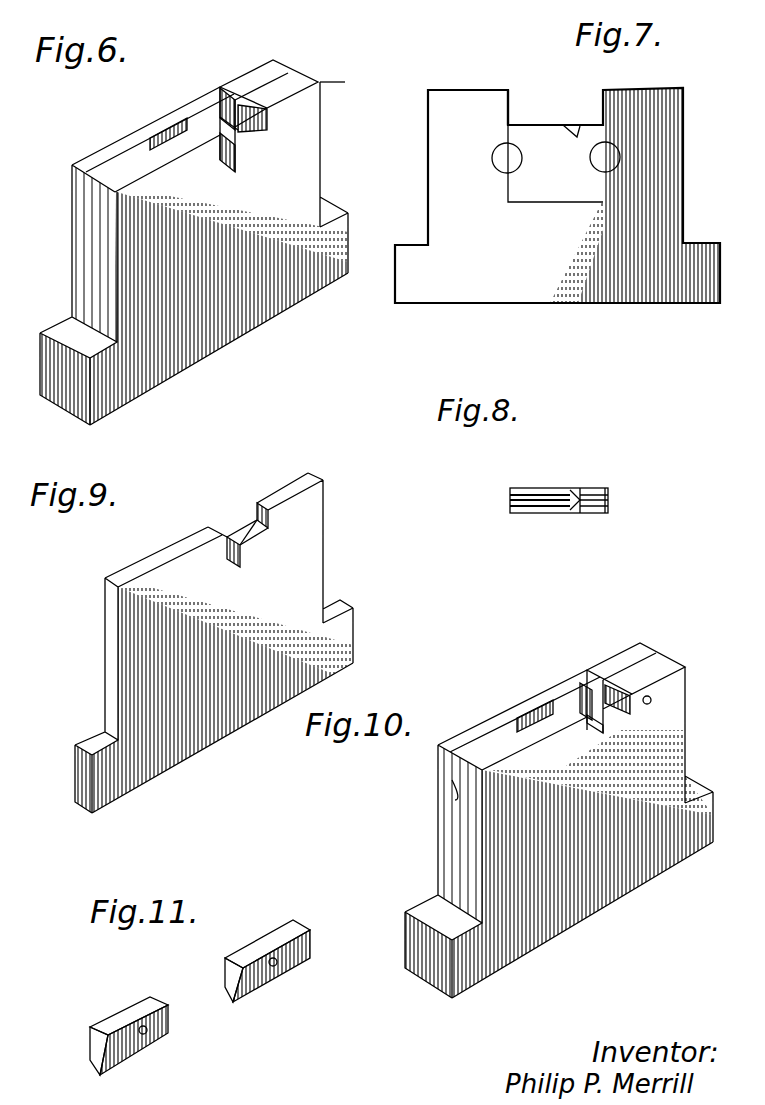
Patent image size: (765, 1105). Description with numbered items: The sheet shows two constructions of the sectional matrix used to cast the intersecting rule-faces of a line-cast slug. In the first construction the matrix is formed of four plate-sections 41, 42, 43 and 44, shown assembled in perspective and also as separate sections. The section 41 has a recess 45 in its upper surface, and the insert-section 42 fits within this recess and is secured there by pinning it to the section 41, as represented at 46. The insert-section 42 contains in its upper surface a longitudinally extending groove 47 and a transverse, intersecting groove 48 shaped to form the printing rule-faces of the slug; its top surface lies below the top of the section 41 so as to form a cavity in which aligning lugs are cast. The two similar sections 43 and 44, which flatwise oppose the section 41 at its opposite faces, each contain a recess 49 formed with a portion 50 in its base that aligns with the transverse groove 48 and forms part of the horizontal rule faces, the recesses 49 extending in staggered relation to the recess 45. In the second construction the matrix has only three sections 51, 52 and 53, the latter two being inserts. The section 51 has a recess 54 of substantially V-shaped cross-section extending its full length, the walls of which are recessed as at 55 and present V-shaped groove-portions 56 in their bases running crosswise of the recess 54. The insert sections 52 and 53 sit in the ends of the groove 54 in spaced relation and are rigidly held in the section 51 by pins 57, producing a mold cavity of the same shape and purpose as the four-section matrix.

In FIG. 6, the plate-section 41 is at (287, 76).
In FIG. 7, the plate-section 41 is at (672, 223).
In FIG. 6, the insert-section 42 is at (155, 138).
In FIG. 7, the insert-section 42 is at (583, 190).
In FIG. 8, the insert-section 42 is at (535, 488).
In FIG. 6, the plate-section 43 is at (347, 84).
In FIG. 6, the plate-section 44 is at (273, 66).
In FIG. 9, the plate-section 44 is at (223, 643).
In FIG. 7, the recess 45 is at (510, 108).
In FIG. 7, the pinning 46 is at (500, 152).
In FIG. 8, the longitudinally extending groove 47 is at (550, 507).
In FIG. 7, the transverse groove 48 is at (577, 138).
In FIG. 8, the transverse groove 48 is at (578, 489).
In FIG. 6, the recess 49 is at (233, 140).
In FIG. 9, the recess 49 is at (247, 532).
In FIG. 6, the portion 50 is at (238, 163).
In FIG. 9, the portion 50 is at (242, 557).
In FIG. 10, the section 51 is at (455, 863).
In FIG. 10, the insert section 52 is at (495, 738).
In FIG. 11, the insert section 52 is at (115, 1018).
In FIG. 10, the insert section 53 is at (658, 658).
In FIG. 11, the insert section 53 is at (278, 932).
In FIG. 10, the recess 54 is at (452, 780).
In FIG. 10, the recess 55 is at (573, 698).
In FIG. 10, the V-shaped groove-portion 56 is at (553, 703).
In FIG. 10, the pin 57 is at (652, 700).